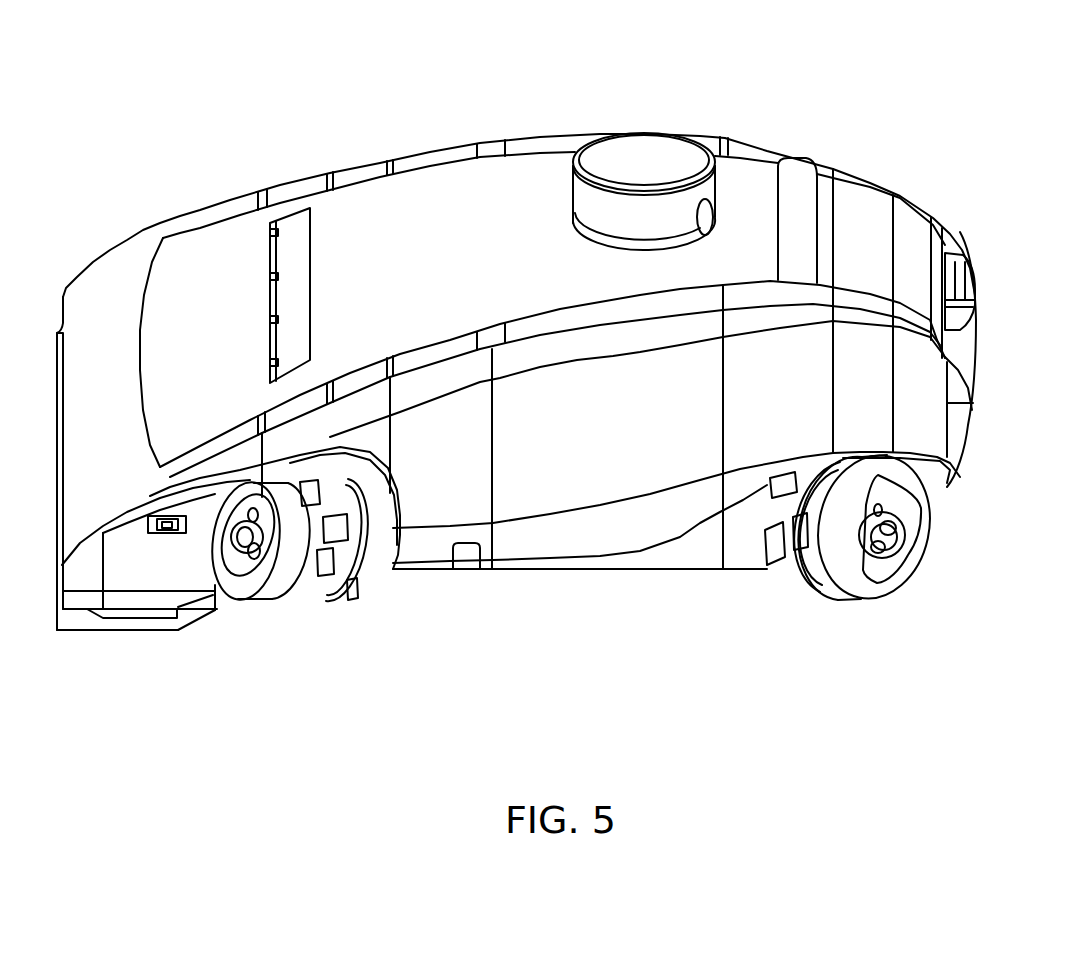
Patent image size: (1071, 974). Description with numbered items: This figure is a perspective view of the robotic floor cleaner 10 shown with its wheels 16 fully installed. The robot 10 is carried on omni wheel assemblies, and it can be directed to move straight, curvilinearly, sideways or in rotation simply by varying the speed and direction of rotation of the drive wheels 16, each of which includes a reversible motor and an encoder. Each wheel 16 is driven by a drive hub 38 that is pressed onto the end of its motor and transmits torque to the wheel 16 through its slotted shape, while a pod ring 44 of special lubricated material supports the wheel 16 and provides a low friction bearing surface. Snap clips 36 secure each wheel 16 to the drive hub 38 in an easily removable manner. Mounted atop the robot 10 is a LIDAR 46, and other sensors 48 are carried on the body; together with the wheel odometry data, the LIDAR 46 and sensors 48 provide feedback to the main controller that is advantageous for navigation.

The robotic floor cleaner 10 is at (581, 592).
The drive wheel 16 is at (337, 582).
The suspension spring clip 36 is at (237, 562).
The drive hub 38 is at (325, 567).
The pod ring 44 is at (257, 582).
The LIDAR 46 is at (648, 163).
The sensors 48 is at (273, 227).